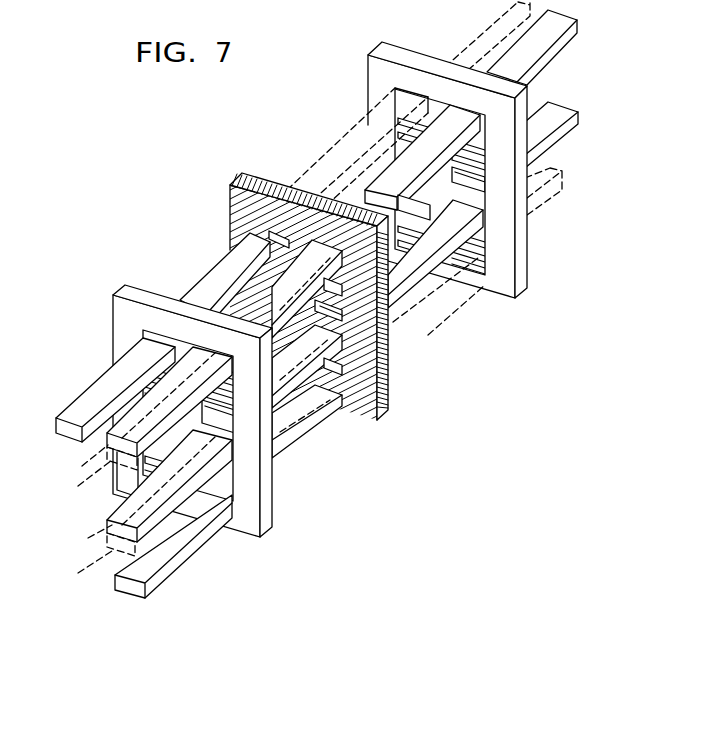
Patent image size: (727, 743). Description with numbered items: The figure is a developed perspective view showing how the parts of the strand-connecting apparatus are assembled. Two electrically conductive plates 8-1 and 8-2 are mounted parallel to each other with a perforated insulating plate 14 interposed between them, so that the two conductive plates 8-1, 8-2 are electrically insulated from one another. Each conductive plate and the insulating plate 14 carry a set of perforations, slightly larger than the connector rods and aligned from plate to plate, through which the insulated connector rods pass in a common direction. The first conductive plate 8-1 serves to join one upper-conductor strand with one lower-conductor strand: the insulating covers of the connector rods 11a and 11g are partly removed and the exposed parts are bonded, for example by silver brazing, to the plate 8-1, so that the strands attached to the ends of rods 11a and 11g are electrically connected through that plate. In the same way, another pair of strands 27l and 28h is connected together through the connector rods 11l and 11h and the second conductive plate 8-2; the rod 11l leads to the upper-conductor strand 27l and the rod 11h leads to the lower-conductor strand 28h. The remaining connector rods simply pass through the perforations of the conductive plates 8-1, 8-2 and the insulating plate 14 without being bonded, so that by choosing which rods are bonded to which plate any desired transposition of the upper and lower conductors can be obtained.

The connector rod 11a is at (96, 397).
The connector rod 11l is at (83, 467).
The strand 27l is at (78, 486).
The connector rod 11h is at (88, 538).
The strand 28h is at (78, 573).
The conductive plate 8-1 is at (247, 520).
The connector rod 11g is at (160, 557).
The insulating plate 14 is at (367, 407).
The conductive plate 8-2 is at (487, 284).